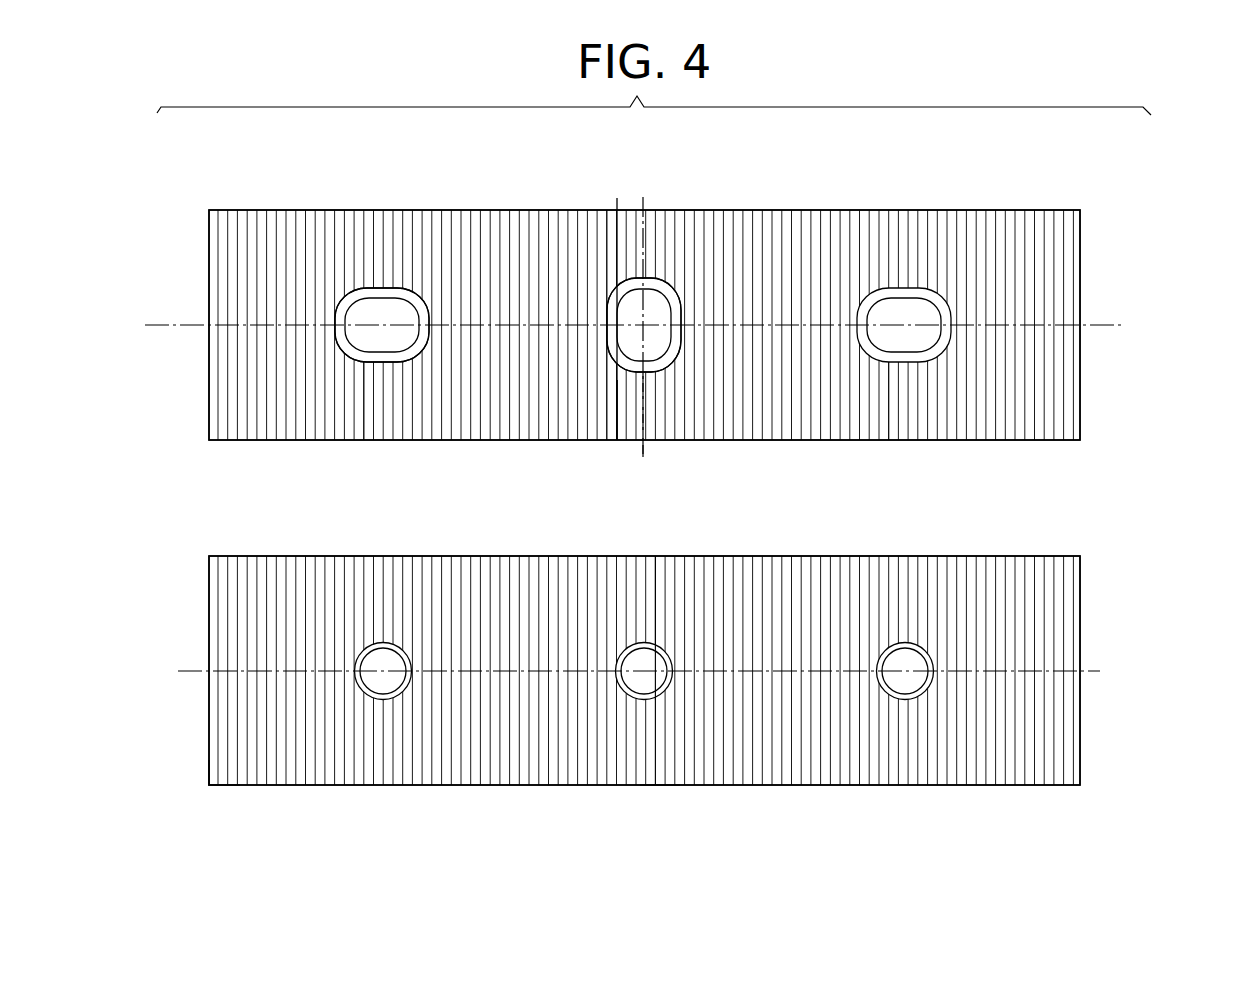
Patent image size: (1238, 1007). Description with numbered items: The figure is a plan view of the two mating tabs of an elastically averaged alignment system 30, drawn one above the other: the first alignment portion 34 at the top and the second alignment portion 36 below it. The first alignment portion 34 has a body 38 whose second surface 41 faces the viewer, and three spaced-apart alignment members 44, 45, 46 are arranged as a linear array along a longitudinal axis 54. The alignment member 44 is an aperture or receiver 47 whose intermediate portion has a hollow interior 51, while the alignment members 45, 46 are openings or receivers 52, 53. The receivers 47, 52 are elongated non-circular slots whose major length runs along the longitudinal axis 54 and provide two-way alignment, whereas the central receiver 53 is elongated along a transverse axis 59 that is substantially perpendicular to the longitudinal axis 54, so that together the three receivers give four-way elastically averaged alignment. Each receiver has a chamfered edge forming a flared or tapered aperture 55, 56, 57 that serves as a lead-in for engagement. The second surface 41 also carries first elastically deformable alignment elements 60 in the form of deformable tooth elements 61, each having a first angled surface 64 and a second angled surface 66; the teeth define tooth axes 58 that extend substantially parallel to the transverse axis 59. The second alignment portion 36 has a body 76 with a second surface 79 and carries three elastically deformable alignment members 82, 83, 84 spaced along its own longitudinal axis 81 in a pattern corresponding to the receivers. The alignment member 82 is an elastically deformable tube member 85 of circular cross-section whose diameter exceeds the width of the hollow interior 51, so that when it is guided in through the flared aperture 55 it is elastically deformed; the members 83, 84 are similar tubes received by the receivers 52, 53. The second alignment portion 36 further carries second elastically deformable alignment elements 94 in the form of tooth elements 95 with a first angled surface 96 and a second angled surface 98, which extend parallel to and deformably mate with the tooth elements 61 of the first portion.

The elastically averaged alignment system 30 is at (1105, 523).
The first alignment portion 34 is at (1093, 193).
The second alignment portion 36 is at (150, 685).
The body 38 is at (1086, 243).
The second surface 41 is at (247, 412).
The alignment member 44 is at (368, 375).
The alignment member 45 is at (892, 377).
The alignment member 46 is at (707, 350).
The receiver 47 is at (333, 350).
The hollow interior 51 is at (403, 347).
The receiver 52 is at (898, 280).
The receiver 53 is at (597, 287).
The longitudinal axis 54 is at (1095, 322).
The tapered aperture 55 is at (337, 307).
The tapered aperture 56 is at (932, 283).
The tapered aperture 57 is at (667, 367).
The tooth axis 58 is at (617, 237).
The transverse axis 59 is at (643, 450).
The first elastically deformable alignment elements 60 is at (623, 452).
The elastically deformable tooth element 61 is at (618, 438).
The first angled surface 64 is at (610, 237).
The second angled surface 66 is at (625, 243).
The body 76 is at (1086, 633).
The second surface 79 is at (215, 787).
The longitudinal axis 81 is at (177, 654).
The elastically deformable alignment member 82 is at (430, 692).
The elastically deformable alignment member 83 is at (953, 693).
The elastically deformable alignment member 84 is at (690, 691).
The elastically deformable tube member 85 is at (347, 647).
The second elastically deformable alignment elements 94 is at (664, 792).
The elastically deformable tooth element 95 is at (657, 778).
The first angled surface 96 is at (655, 584).
The second angled surface 98 is at (652, 585).